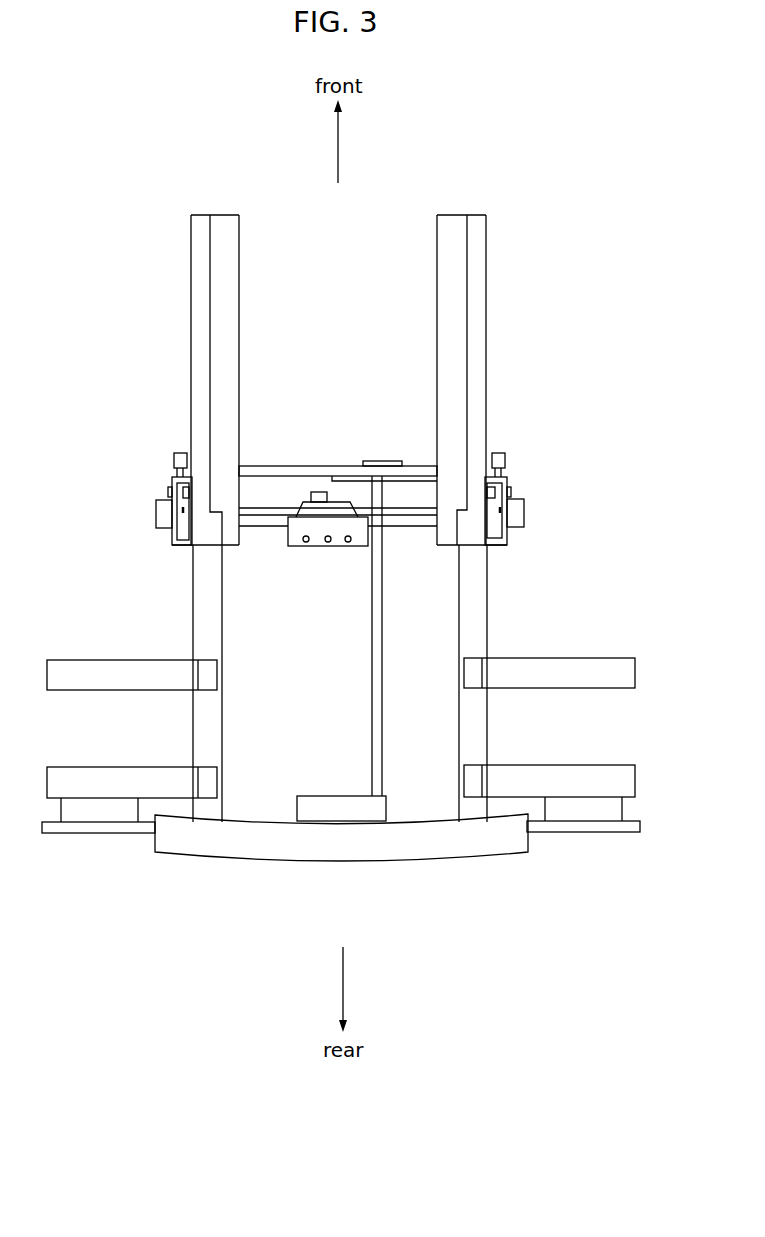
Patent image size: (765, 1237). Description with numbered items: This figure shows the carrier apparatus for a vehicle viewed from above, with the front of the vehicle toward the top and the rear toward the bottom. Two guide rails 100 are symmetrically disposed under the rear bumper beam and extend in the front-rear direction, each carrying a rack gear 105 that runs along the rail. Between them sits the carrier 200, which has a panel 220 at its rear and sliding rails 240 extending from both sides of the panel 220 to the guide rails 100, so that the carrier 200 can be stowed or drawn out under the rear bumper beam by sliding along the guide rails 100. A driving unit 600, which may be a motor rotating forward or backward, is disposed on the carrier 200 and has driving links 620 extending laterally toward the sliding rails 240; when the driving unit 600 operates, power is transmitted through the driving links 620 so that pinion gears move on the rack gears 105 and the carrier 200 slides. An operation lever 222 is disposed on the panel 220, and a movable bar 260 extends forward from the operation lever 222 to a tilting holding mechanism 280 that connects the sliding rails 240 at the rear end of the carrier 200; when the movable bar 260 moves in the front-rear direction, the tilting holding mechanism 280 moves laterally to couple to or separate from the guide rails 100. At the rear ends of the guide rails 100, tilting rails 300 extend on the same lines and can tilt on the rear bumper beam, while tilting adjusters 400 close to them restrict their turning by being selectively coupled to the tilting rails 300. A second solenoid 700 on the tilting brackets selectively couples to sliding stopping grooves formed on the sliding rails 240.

The guide rail 100 is at (486, 300).
The rack gear 105 is at (218, 372).
The carrier 200 is at (341, 728).
The panel 220 is at (263, 860).
The operation lever 222 is at (380, 805).
The sliding rail 240 is at (488, 603).
The movable bar 260 is at (378, 709).
The tilting holding mechanism 280 is at (397, 450).
The tilting rail 300 is at (146, 525).
The tilting adjuster 400 is at (174, 458).
The driving unit 600 is at (300, 526).
The driving link 620 is at (418, 512).
The second solenoid 700 is at (168, 490).